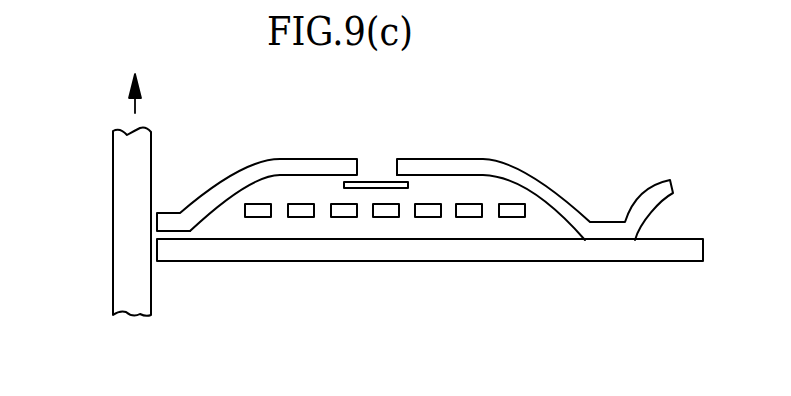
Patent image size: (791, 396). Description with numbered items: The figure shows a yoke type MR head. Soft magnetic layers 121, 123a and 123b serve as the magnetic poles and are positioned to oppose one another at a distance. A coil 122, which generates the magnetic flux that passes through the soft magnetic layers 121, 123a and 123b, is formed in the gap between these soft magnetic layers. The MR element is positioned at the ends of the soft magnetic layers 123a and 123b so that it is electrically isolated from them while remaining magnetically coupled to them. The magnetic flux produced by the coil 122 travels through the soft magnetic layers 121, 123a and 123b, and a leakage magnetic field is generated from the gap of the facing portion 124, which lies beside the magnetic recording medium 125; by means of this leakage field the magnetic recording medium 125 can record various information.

The soft magnetic layer 121 is at (485, 250).
The coil 122 is at (298, 218).
The soft magnetic layer 123a is at (280, 160).
The soft magnetic layer 123b is at (523, 167).
The facing portion 124 is at (172, 210).
The magnetic recording medium 125 is at (131, 318).
The MR element MR is at (385, 185).